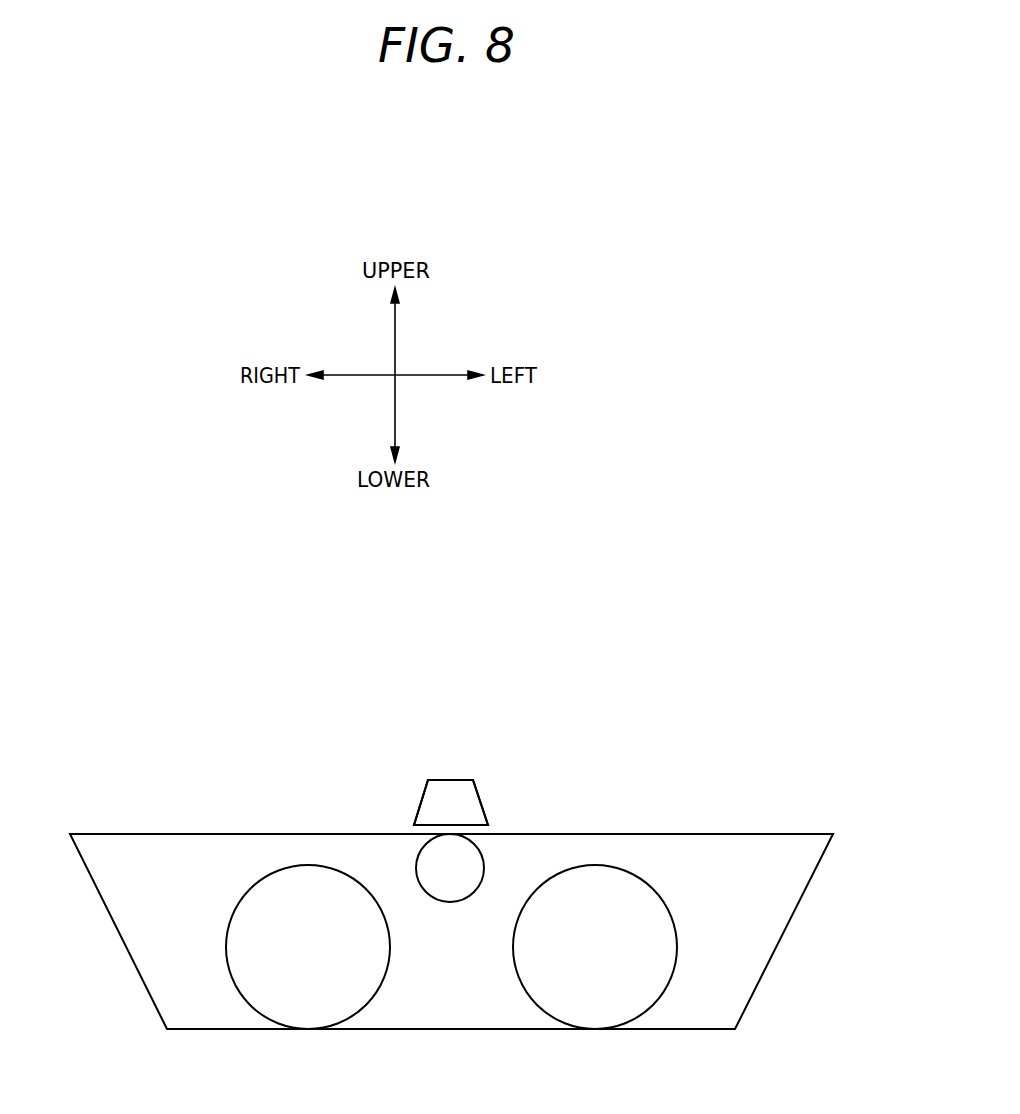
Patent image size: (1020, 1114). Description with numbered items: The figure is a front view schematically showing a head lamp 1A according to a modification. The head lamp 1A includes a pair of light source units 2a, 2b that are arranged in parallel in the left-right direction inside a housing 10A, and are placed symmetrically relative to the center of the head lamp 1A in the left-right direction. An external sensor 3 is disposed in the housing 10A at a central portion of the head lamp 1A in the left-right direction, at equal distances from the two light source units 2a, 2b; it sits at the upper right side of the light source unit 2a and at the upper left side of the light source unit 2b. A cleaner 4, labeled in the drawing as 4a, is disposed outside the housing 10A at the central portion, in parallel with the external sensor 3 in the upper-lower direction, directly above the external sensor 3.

The head lamp 1A is at (692, 690).
The housing 10A is at (778, 945).
The light source unit 2a is at (645, 912).
The light source unit 2b is at (270, 913).
The external sensor 3 is at (443, 887).
The blade 4a is at (473, 798).
The cleaner 4 is at (451, 802).